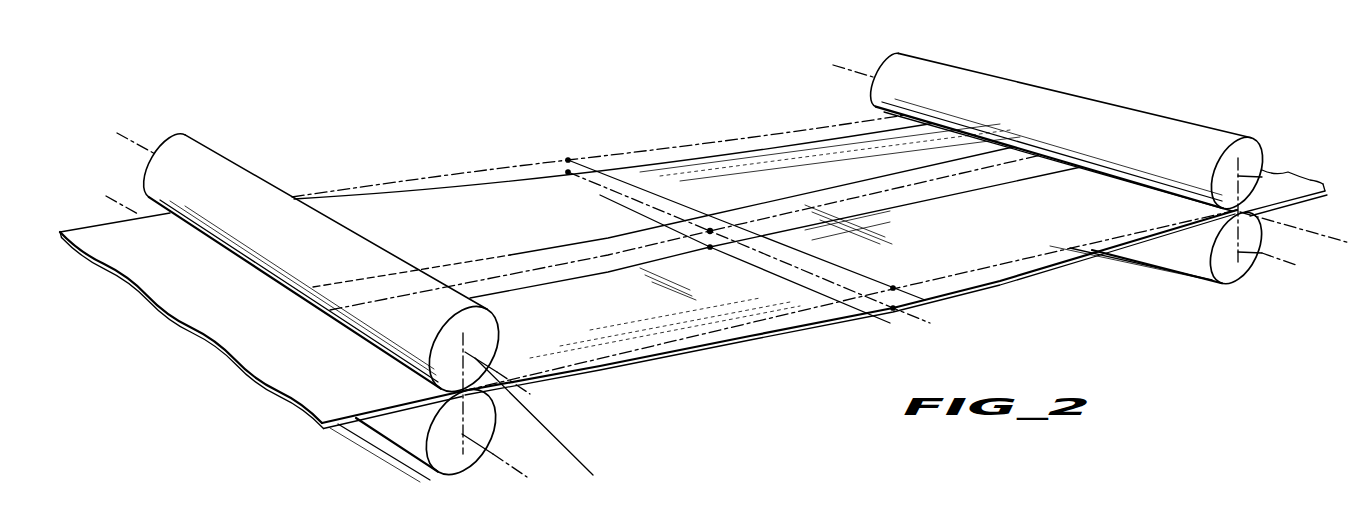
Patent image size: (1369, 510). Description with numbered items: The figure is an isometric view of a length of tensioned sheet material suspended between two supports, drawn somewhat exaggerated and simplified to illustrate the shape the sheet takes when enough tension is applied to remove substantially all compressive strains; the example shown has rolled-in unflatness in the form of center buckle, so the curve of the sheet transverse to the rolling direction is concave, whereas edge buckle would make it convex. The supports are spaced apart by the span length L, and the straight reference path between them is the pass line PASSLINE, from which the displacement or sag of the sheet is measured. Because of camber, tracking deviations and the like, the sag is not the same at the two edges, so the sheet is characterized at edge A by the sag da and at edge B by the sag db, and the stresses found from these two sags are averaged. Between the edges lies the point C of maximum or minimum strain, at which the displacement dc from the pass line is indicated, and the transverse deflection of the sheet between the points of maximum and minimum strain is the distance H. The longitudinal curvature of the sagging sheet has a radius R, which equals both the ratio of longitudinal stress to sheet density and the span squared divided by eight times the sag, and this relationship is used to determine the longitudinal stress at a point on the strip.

The edge a A is at (741, 338).
The edge b B is at (448, 187).
The maximum or minimum strain point c C is at (710, 231).
The transverse deflection of sheet H is at (608, 208).
The span length between supports L is at (1327, 237).
The radius of longitudinal curvature R is at (791, 219).
The sag at edge a da is at (893, 280).
The sag at edge b db is at (568, 215).
The deviation at center dc is at (710, 178).
The pass line PASSLINE is at (1020, 262).